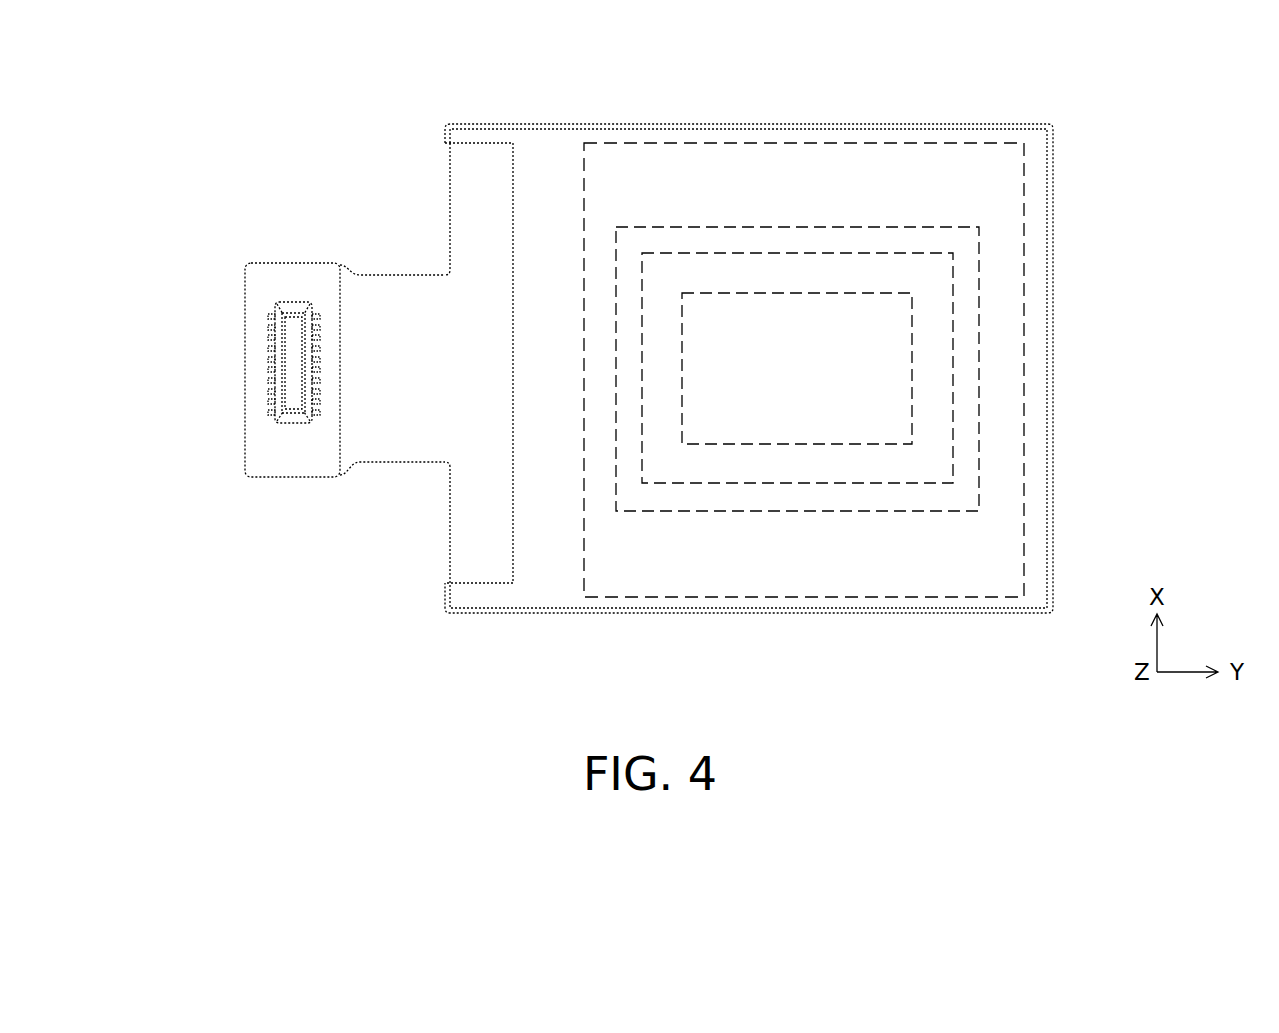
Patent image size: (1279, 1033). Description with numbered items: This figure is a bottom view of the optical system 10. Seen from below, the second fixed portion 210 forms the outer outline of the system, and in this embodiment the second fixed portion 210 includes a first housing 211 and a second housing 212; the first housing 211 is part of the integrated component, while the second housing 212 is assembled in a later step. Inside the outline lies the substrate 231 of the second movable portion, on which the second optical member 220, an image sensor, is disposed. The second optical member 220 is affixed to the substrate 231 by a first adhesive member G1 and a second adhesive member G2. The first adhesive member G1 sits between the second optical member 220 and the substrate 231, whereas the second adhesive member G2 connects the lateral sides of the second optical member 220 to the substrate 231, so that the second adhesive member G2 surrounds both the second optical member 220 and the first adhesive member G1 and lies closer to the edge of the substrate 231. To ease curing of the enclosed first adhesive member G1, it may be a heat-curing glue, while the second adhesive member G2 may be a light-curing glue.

The optical system 10 is at (157, 53).
The second fixed portion 210 is at (986, 124).
The first housing 211 is at (383, 290).
The second housing 212 is at (552, 137).
The second optical member 220 is at (840, 483).
The substrate 231 is at (833, 143).
The first adhesive member G1 is at (724, 293).
The second adhesive member G2 is at (726, 511).